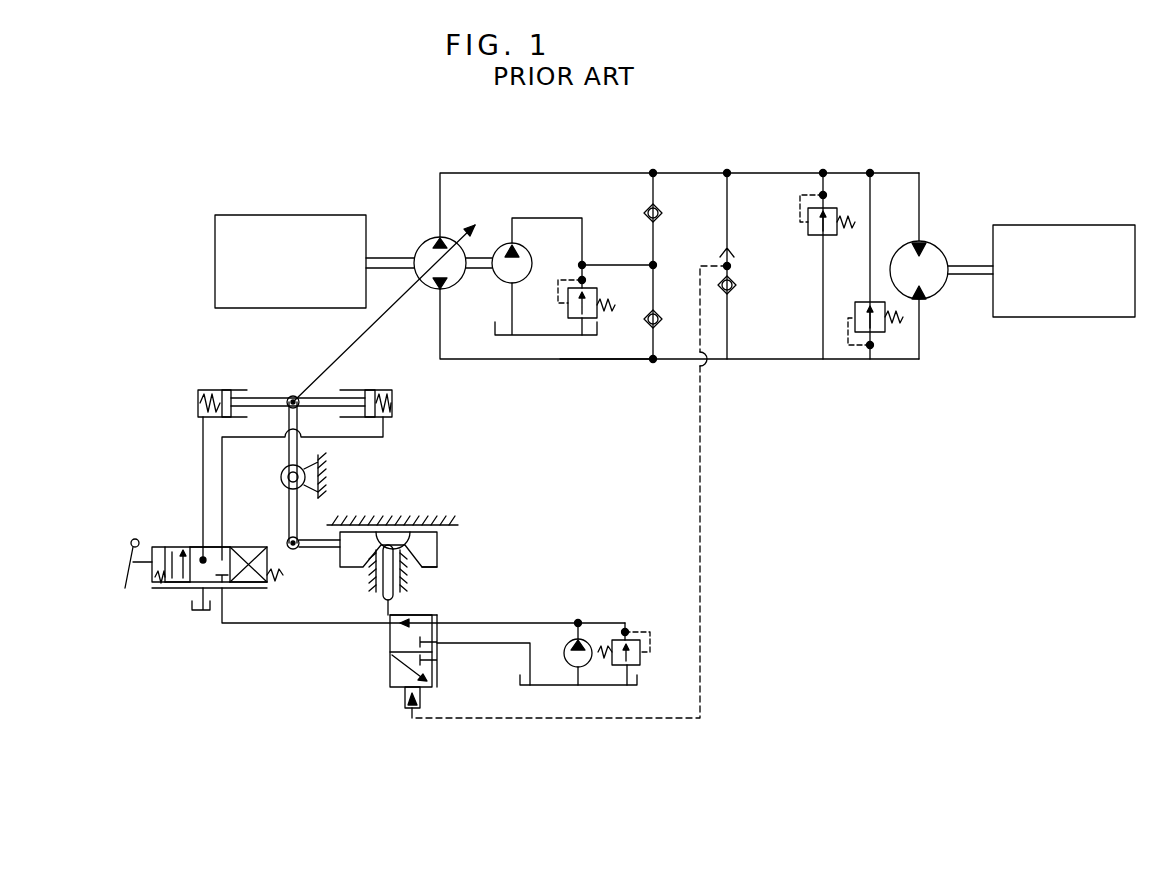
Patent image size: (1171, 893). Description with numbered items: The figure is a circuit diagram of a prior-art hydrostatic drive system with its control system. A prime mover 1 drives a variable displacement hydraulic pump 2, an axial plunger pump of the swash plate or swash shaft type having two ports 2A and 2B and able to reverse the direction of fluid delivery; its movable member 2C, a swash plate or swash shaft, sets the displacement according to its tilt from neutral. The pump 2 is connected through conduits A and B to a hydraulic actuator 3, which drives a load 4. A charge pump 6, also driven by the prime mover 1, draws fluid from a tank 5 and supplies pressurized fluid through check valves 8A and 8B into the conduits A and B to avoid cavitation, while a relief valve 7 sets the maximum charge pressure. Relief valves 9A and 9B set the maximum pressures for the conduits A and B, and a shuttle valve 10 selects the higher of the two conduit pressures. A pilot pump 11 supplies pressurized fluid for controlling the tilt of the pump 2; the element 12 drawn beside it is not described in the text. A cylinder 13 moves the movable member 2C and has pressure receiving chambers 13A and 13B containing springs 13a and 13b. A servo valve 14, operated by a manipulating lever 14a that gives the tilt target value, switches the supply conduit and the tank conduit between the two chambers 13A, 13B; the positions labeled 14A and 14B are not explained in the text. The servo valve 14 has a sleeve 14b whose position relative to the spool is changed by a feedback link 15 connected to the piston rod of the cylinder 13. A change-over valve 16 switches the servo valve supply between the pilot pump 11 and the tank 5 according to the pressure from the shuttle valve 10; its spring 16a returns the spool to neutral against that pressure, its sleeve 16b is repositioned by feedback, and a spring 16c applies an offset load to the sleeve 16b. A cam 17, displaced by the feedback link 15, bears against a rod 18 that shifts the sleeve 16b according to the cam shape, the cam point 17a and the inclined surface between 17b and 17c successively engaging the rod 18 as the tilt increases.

The prime mover 1 is at (346, 215).
The variable displacement hydraulic pump 2 is at (425, 245).
The port 2A is at (445, 238).
The port 2B is at (445, 292).
The movable member 2C is at (392, 308).
The hydraulic actuator 3 is at (938, 254).
The load 4 is at (1103, 225).
The tank 5 is at (209, 610).
The charge pump 6 is at (522, 257).
The relief valve 7 is at (567, 310).
The check valve 8A is at (659, 219).
The check valve 8B is at (660, 322).
The relief valve 9A is at (813, 236).
The relief valve 9B is at (866, 302).
The shuttle valve 10 is at (733, 290).
The pilot pump 11 is at (565, 658).
The relief valve 12 is at (642, 664).
The cylinder 13 is at (280, 369).
The pressure receiving chamber 13A is at (196, 405).
The pressure receiving chamber 13B is at (392, 397).
The spring 13a is at (200, 413).
The spring 13b is at (392, 417).
The servo valve 14 is at (149, 547).
The manipulating lever 14a is at (130, 560).
The sleeve 14b is at (190, 547).
The valve position 14A is at (259, 601).
The valve position 14B is at (162, 601).
The feedback link 15 is at (289, 505).
The change-over valve 16 is at (434, 617).
The spring 16a is at (406, 613).
The sleeve 16b is at (390, 657).
The spring 16c is at (395, 701).
The cam 17 is at (340, 561).
The point of the cam 17a is at (382, 527).
The cam point 17b is at (410, 527).
The cam point 17c is at (436, 565).
The rod 18 is at (383, 597).
The conduit A is at (511, 173).
The conduit B is at (550, 360).